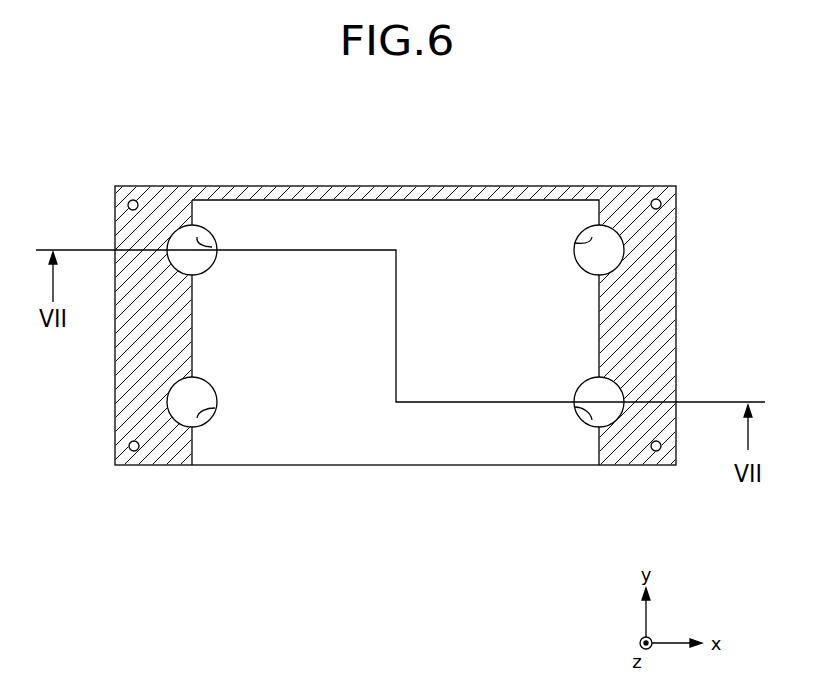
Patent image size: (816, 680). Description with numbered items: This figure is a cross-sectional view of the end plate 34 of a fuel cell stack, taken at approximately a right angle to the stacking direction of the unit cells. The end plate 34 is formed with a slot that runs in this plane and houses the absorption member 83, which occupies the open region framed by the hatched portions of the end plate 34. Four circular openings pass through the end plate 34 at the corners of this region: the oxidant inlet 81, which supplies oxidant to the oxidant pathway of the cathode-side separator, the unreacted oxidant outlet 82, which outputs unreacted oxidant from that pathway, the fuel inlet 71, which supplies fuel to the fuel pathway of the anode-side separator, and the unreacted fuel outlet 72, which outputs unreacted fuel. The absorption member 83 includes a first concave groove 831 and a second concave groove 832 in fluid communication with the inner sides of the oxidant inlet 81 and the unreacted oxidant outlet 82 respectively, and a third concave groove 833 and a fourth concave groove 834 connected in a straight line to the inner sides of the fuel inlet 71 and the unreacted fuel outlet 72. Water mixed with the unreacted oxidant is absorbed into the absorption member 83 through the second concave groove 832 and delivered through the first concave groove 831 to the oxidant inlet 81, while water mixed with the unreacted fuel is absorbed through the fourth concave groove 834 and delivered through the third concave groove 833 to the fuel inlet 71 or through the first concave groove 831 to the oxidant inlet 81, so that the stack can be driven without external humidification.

The end plate 34 is at (387, 186).
The absorption member 83 is at (389, 443).
The oxidant inlet 81 is at (182, 240).
The unreacted oxidant outlet 82 is at (608, 392).
The fuel inlet 71 is at (610, 250).
The unreacted fuel outlet 72 is at (182, 401).
The first concave groove 831 is at (197, 237).
The second concave groove 832 is at (592, 420).
The third concave groove 833 is at (592, 237).
The fourth concave groove 834 is at (197, 418).